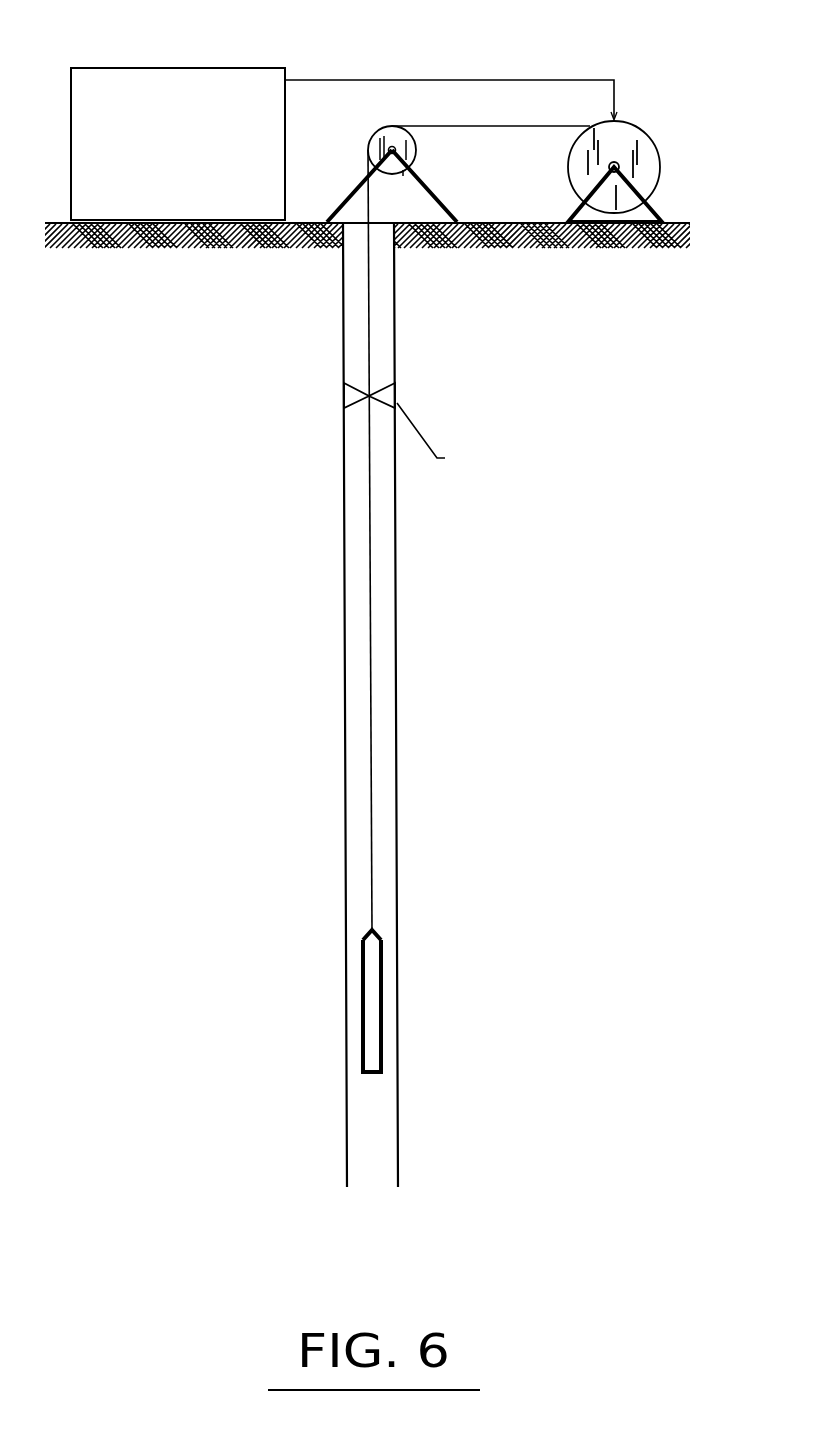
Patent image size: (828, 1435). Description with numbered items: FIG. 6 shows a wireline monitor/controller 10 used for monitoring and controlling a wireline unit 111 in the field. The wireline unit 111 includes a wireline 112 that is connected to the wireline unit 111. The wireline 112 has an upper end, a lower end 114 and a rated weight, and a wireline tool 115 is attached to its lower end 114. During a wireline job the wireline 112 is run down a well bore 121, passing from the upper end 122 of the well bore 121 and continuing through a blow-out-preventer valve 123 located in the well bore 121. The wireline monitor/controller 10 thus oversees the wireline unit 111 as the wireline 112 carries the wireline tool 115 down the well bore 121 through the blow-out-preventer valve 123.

The wireline monitor/controller 10 is at (203, 68).
The wireline unit 111 is at (650, 128).
The wireline 112 is at (369, 332).
The lower end 114 is at (376, 931).
The wireline tool 115 is at (381, 1042).
The well bore 121 is at (387, 293).
The upper end 122 is at (365, 177).
The blow-out-preventer valve 123 is at (343, 403).